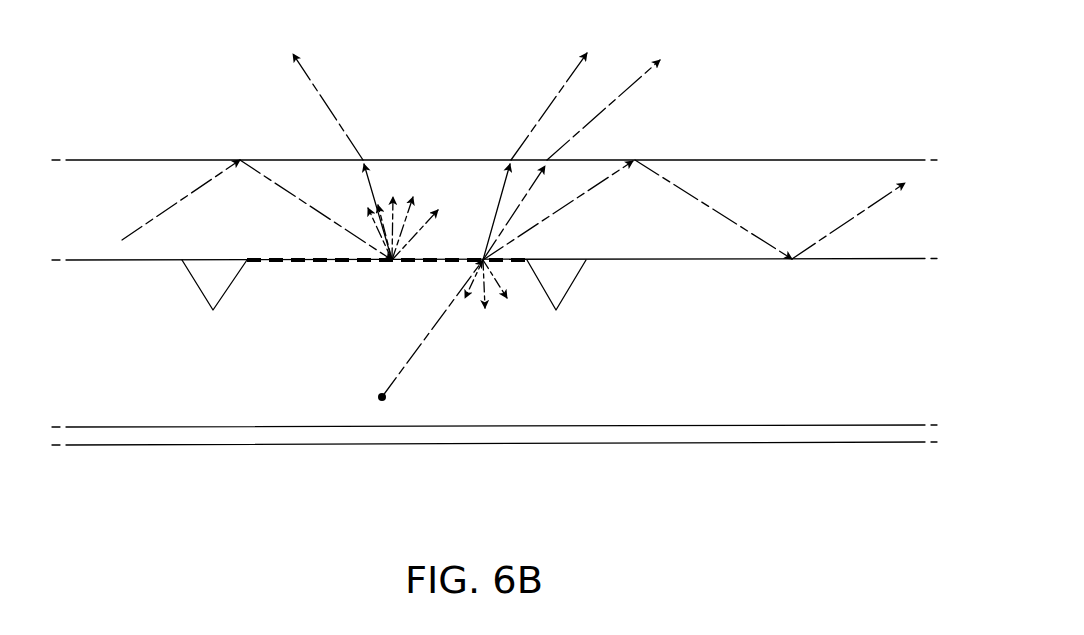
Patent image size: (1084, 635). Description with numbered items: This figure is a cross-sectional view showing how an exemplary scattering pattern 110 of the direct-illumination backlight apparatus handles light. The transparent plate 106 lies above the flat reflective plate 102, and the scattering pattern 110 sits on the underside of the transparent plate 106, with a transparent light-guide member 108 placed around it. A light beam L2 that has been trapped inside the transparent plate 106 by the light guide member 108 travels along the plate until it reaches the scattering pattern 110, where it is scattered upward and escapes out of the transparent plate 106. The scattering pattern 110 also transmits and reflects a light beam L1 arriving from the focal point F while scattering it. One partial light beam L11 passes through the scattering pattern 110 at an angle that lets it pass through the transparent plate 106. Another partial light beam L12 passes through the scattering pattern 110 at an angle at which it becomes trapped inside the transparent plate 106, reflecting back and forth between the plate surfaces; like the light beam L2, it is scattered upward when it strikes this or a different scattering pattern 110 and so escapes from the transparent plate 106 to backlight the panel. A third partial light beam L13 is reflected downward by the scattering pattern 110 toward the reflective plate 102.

The flat reflective plate 102 is at (73, 434).
The transparent plate 106 is at (907, 206).
The transparent light-guide member 108 is at (205, 281).
The scattering pattern 110 is at (315, 263).
The focal point F is at (382, 397).
The light beam L1 is at (423, 338).
The light beam L2 is at (197, 188).
The partial light beam L11 is at (563, 88).
The partial light beam L12 is at (608, 160).
The partial light beam L13 is at (497, 288).